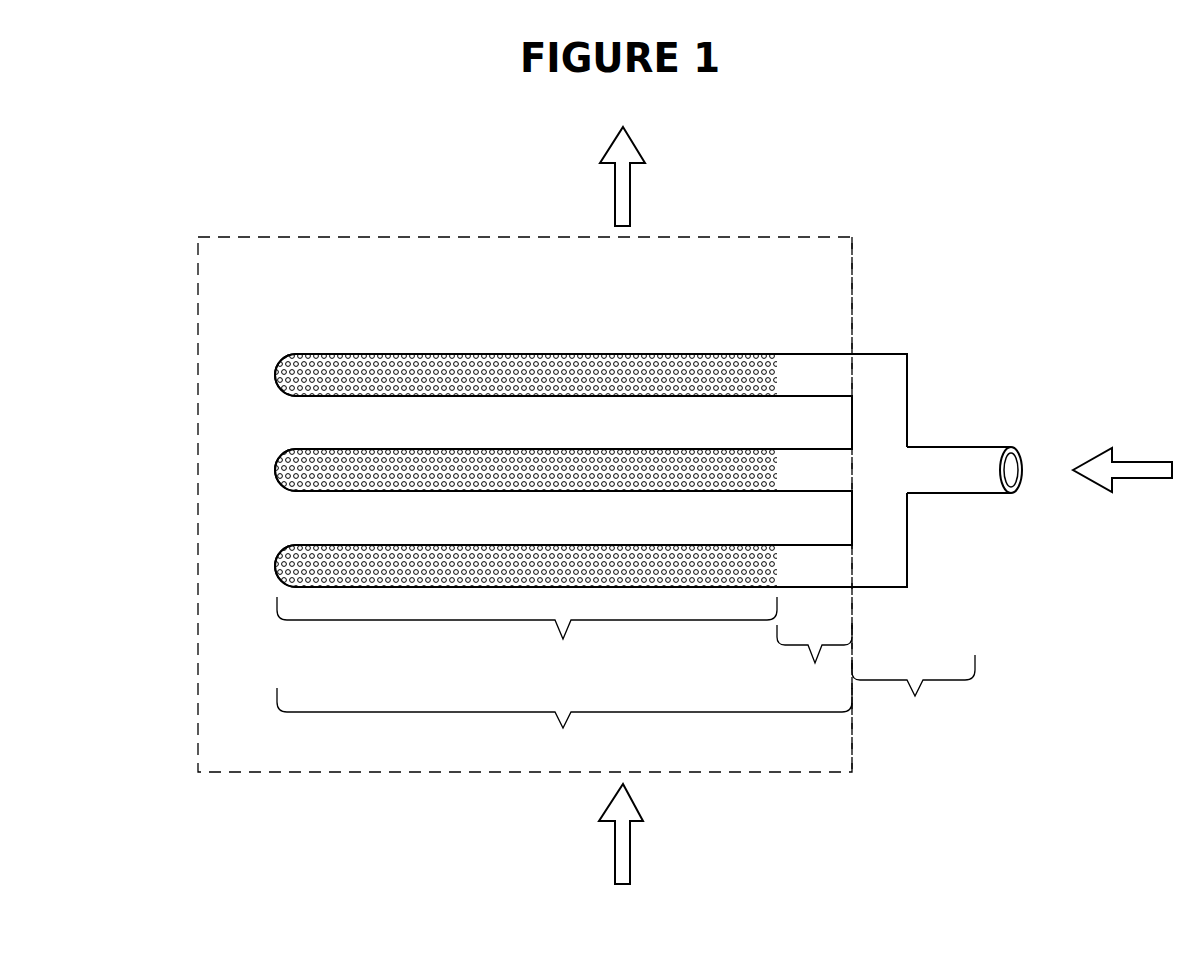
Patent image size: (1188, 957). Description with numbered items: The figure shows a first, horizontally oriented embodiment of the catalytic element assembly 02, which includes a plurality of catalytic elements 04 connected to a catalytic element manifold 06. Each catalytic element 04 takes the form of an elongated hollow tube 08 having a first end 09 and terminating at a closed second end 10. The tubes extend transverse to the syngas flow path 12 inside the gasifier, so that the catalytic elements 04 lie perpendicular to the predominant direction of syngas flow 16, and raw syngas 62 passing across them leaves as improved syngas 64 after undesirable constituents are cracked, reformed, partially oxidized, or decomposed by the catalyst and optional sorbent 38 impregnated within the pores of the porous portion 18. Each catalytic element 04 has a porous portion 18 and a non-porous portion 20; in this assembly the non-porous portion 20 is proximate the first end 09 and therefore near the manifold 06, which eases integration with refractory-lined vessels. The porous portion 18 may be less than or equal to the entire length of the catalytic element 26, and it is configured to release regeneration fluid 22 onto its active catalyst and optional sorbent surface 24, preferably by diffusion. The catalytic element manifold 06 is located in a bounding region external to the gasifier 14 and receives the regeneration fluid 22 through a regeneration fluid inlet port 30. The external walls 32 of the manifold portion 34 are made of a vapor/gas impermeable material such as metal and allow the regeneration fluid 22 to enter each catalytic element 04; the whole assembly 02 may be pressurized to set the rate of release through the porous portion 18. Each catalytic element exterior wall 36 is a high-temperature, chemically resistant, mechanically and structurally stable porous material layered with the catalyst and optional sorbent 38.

The catalytic element assembly 02 is at (975, 343).
The catalytic elements 04 is at (611, 354).
The catalytic element manifold 06 is at (907, 555).
The elongated hollow tube 08 is at (692, 354).
The first end 09 is at (818, 354).
The closed second end 10 is at (277, 360).
The syngas flow path 12 is at (797, 295).
The bounding region external to the gasifier 14 is at (852, 280).
The predominant direction of syngas flow 16 is at (660, 505).
The porous portion 18 is at (527, 631).
The non-porous portion 20 is at (814, 658).
The regeneration fluid 22 is at (1140, 462).
The active catalyst and optional sorbent surface 24 is at (367, 354).
The entire length of the catalytic element 26 is at (564, 723).
The regeneration fluid inlet port 30 is at (1011, 447).
The external walls 32 is at (957, 447).
The manifold portion 34 is at (913, 690).
The catalytic element exterior wall 36 is at (530, 354).
The catalyst and optional sorbent 38 is at (448, 354).
The raw syngas 62 is at (630, 852).
The improved syngas 64 is at (630, 195).